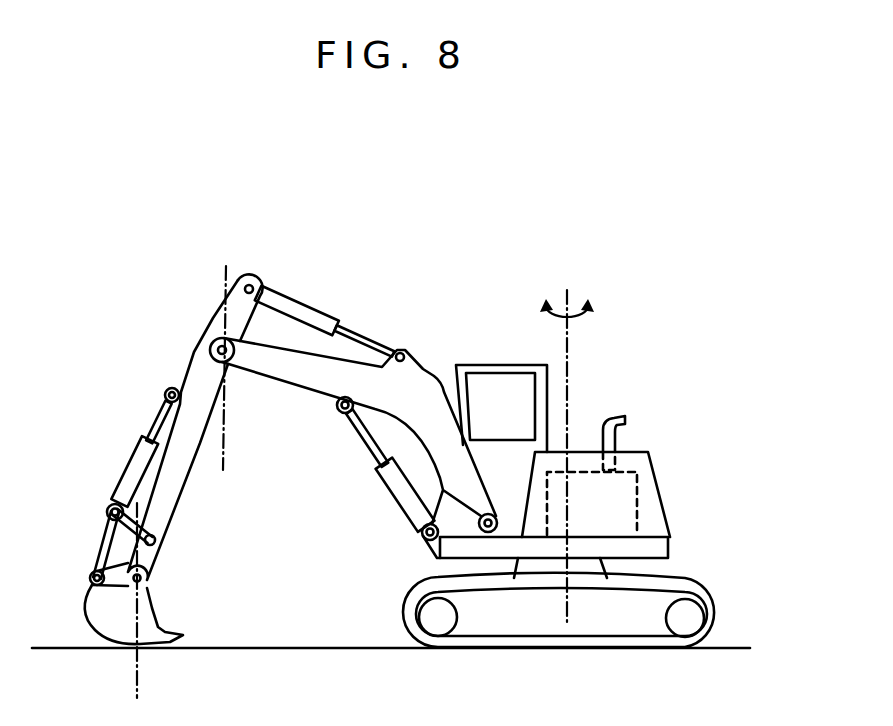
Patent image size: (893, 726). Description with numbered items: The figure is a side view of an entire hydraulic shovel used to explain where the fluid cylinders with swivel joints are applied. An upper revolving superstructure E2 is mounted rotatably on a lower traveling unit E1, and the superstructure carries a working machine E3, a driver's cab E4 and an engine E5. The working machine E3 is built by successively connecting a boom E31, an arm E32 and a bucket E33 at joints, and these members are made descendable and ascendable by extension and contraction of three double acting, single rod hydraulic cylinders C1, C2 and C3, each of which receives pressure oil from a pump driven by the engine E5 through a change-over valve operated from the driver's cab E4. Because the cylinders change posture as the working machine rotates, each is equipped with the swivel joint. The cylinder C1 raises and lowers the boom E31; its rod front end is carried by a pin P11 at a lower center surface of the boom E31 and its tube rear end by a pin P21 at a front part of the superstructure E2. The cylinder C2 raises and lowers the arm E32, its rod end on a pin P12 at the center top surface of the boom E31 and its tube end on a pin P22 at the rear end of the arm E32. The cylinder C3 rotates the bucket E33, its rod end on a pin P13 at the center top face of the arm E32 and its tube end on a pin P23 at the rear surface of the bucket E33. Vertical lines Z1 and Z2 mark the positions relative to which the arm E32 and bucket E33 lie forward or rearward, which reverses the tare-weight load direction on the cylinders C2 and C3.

The lower traveling unit E1 is at (723, 622).
The upper revolving superstructure E2 is at (678, 545).
The working machine E3 is at (235, 262).
The boom E31 is at (288, 373).
The arm E32 is at (173, 513).
The bucket E33 is at (157, 613).
The driver's cab E4 is at (490, 365).
The engine E5 is at (637, 452).
The cylinder for raising and lowering the boom C1 is at (398, 503).
The cylinder for raising and lowering the arm C2 is at (317, 312).
The cylinder for rotating the bucket C3 is at (125, 468).
The pin P11 is at (342, 412).
The pin P12 is at (403, 350).
The pin P13 is at (167, 393).
The pin P21 is at (427, 543).
The pin P22 is at (253, 283).
The pin P23 is at (108, 523).
The vertical line Z1 is at (223, 455).
The vertical line Z2 is at (136, 686).